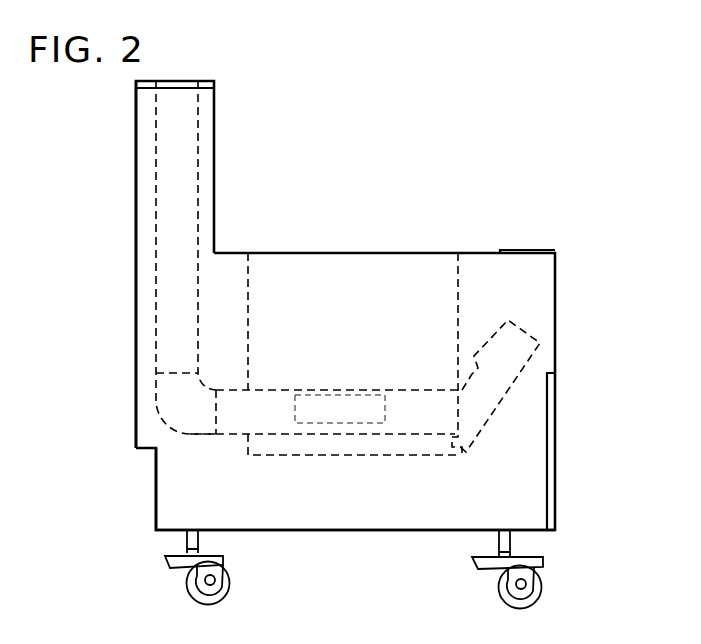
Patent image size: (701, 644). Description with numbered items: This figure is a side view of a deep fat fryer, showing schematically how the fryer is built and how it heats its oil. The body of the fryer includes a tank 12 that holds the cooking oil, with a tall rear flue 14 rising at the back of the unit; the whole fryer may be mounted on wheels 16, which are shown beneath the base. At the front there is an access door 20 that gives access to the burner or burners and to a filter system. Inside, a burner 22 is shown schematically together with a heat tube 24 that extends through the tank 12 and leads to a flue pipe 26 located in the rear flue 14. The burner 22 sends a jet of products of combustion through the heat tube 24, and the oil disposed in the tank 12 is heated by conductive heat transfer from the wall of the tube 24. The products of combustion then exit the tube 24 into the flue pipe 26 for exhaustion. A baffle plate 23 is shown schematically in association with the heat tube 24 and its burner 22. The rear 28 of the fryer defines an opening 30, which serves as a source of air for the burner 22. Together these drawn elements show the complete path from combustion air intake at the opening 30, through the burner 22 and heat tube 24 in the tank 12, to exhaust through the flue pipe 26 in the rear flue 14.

The tank 12 is at (462, 283).
The rear flue 14 is at (214, 120).
The wheels 16 is at (230, 582).
The access door 20 is at (555, 430).
The burner 22 is at (523, 332).
The baffle plate 23 is at (357, 418).
The heat tube 24 is at (350, 390).
The flue pipe 26 is at (200, 213).
The rear 28 is at (136, 232).
The opening 30 is at (156, 488).